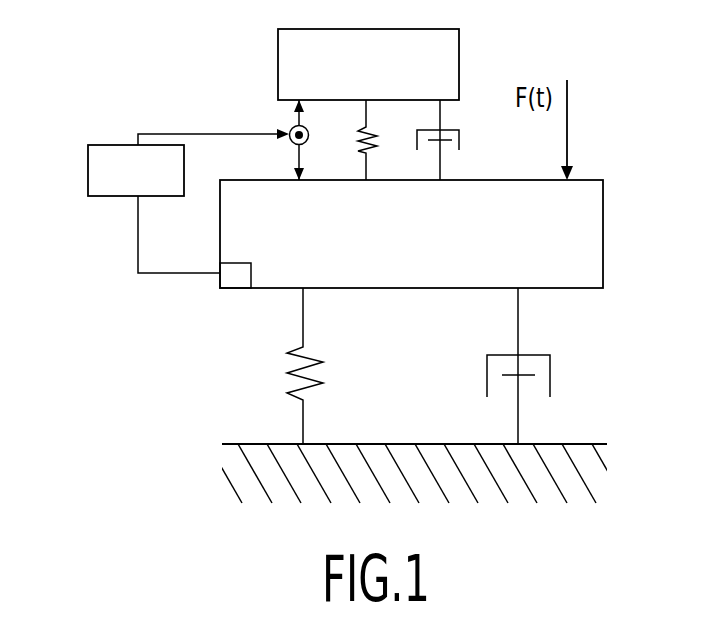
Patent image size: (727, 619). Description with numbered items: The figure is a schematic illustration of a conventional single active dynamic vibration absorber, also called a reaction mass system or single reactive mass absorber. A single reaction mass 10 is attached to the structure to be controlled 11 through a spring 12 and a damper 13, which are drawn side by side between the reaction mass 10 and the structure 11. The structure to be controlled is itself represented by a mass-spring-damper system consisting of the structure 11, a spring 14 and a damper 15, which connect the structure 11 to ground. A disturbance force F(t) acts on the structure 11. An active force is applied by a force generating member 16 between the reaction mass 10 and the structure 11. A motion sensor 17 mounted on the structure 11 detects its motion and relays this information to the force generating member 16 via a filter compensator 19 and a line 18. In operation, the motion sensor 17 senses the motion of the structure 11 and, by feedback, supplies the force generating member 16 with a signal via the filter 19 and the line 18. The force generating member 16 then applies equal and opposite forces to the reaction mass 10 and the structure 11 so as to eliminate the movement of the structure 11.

The reaction mass 10 is at (443, 60).
The structure to be controlled 11 is at (578, 230).
The spring 12 is at (362, 130).
The damper 13 is at (459, 145).
The spring 14 is at (292, 365).
The damper 15 is at (553, 362).
The force generating member 16 is at (291, 127).
The motion sensor 17 is at (232, 286).
The line 18 is at (138, 213).
The filter compensator 19 is at (88, 168).